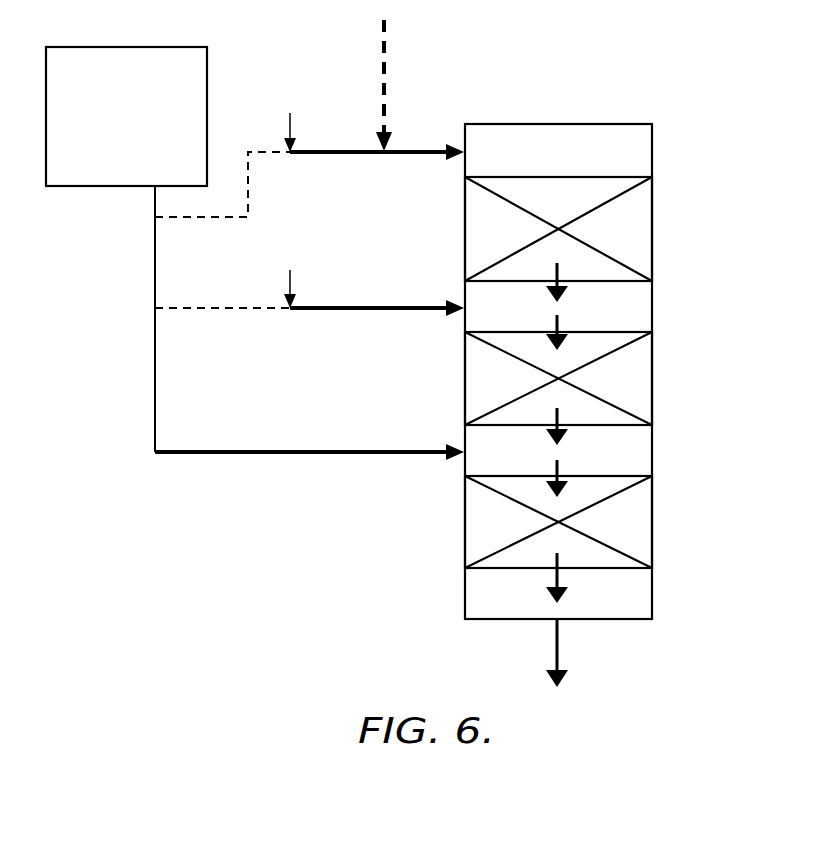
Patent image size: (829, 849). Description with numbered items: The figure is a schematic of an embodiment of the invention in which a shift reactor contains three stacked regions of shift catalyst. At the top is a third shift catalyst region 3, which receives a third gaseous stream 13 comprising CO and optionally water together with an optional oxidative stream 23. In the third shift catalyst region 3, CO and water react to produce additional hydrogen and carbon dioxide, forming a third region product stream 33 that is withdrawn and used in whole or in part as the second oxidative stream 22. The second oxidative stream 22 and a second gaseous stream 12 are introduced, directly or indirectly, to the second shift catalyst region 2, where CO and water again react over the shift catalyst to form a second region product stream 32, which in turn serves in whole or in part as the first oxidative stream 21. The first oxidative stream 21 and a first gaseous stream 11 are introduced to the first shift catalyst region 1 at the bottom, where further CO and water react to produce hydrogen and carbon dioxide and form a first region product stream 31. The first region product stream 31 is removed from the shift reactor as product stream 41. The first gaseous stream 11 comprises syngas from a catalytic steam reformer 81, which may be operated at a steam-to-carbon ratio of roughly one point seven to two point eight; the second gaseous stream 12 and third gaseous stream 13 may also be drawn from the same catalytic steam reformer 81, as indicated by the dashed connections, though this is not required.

The catalytic steam reformer 81 is at (106, 137).
The oxidative stream 23 is at (386, 72).
The third gaseous stream 13 is at (345, 154).
The second gaseous stream 12 is at (358, 310).
The first gaseous stream 11 is at (360, 454).
The third shift catalyst region 3 is at (638, 242).
The second shift catalyst region 2 is at (638, 385).
The first shift catalyst region 1 is at (628, 527).
The third region product stream 33 is at (560, 275).
The second oxidative stream 22 is at (560, 328).
The second region product stream 32 is at (560, 420).
The first oxidative stream 21 is at (560, 465).
The first region product stream 31 is at (560, 580).
The product stream 41 is at (560, 646).